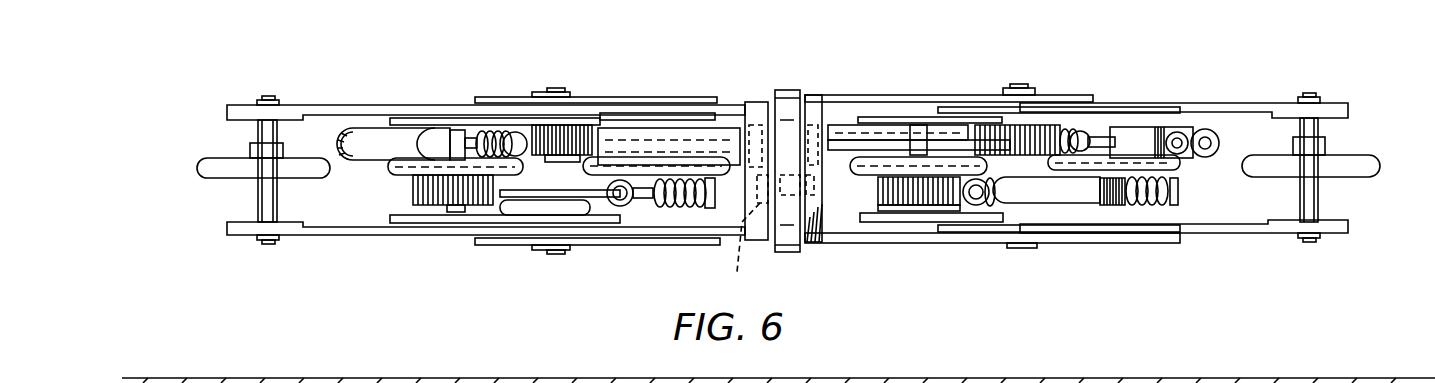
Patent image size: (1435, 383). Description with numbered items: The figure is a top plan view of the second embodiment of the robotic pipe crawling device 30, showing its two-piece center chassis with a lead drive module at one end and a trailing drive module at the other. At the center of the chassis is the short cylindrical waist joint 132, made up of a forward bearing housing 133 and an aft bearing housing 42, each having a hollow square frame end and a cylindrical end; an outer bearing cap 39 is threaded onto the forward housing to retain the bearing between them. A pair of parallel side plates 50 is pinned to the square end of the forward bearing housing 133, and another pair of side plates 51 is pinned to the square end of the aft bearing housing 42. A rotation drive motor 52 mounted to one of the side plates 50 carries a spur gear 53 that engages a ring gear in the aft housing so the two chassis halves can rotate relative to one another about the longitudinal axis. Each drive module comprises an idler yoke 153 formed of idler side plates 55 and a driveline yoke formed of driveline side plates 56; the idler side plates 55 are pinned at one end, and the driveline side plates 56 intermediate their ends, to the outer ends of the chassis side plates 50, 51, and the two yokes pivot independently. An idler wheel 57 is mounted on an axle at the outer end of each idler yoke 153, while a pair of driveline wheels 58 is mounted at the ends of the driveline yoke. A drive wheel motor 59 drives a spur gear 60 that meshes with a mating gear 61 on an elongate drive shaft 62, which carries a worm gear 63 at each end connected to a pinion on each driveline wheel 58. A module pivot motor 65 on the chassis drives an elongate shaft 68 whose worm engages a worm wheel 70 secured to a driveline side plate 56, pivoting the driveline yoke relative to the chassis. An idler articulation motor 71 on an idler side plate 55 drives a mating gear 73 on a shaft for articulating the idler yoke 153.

The robotic pipe crawling device 30 is at (1294, 68).
The outer bearing cap 39 is at (789, 252).
The aft bearing housing 42 is at (757, 102).
The side plates 50 is at (886, 95).
The side plates 51 is at (676, 97).
The rotation drive motor 52 is at (836, 168).
The spur gear 53 is at (739, 254).
The idler side plates 55 is at (313, 106).
The driveline side plates 56 is at (402, 118).
The idler wheel 57 is at (207, 168).
The driveline wheels 58 is at (385, 176).
The drive wheel motor 59 is at (513, 203).
The spur gear 60 is at (978, 206).
The mating gear 61 is at (612, 205).
The elongate drive shaft 62 is at (530, 200).
The worm gear 63 is at (712, 210).
The module pivot motor 65 is at (712, 128).
The elongate shaft 68 is at (622, 130).
The worm wheel 70 is at (575, 128).
The idler articulation motor 71 is at (372, 140).
The mating gear 73 is at (1104, 137).
The waist joint 132 is at (789, 84).
The forward bearing housing 133 is at (832, 231).
The idler yoke 153 is at (294, 251).